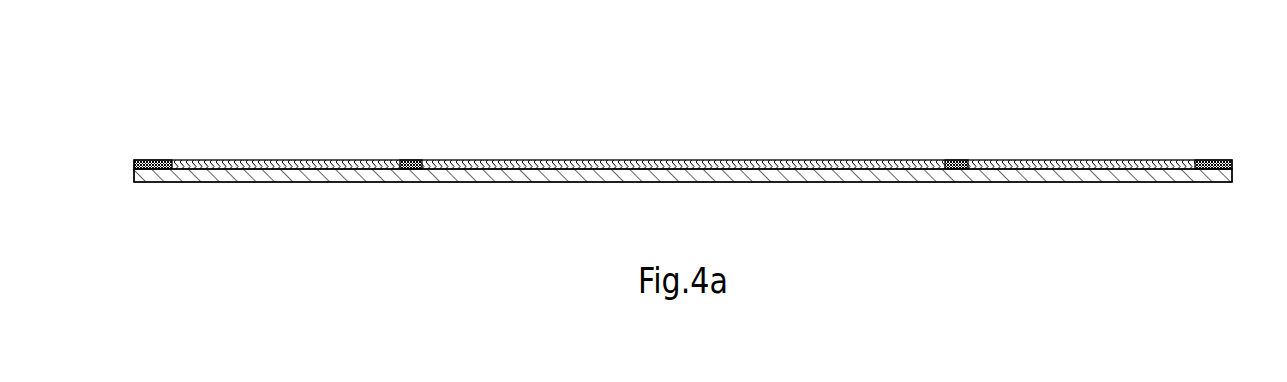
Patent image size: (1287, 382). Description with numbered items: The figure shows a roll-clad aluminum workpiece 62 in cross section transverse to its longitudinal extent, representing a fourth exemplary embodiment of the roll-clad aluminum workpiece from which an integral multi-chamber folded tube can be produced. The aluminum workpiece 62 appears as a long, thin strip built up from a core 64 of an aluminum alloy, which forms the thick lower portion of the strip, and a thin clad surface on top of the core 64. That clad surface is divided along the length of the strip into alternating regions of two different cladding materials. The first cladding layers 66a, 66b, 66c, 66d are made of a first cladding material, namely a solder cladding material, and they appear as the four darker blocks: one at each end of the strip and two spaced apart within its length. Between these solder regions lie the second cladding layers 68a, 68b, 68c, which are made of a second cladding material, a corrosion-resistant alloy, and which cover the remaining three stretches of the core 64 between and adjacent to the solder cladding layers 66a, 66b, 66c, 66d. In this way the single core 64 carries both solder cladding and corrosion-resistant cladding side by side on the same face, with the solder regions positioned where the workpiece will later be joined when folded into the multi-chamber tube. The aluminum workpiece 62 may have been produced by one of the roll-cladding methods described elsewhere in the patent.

The aluminum workpiece 62 is at (686, 134).
The core 64 is at (1163, 178).
The first cladding layer 66a is at (152, 160).
The first cladding layer 66b is at (408, 163).
The first cladding layer 66c is at (957, 163).
The first cladding layer 66d is at (1222, 133).
The second cladding layer 68a is at (297, 165).
The second cladding layer 68b is at (775, 165).
The second cladding layer 68c is at (1083, 165).